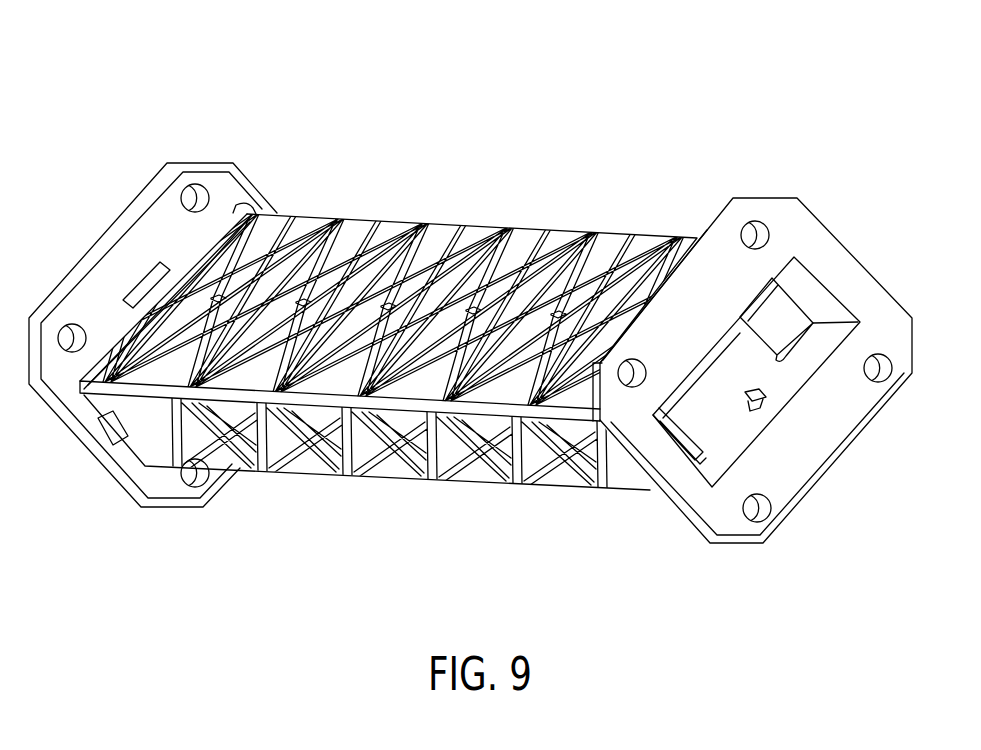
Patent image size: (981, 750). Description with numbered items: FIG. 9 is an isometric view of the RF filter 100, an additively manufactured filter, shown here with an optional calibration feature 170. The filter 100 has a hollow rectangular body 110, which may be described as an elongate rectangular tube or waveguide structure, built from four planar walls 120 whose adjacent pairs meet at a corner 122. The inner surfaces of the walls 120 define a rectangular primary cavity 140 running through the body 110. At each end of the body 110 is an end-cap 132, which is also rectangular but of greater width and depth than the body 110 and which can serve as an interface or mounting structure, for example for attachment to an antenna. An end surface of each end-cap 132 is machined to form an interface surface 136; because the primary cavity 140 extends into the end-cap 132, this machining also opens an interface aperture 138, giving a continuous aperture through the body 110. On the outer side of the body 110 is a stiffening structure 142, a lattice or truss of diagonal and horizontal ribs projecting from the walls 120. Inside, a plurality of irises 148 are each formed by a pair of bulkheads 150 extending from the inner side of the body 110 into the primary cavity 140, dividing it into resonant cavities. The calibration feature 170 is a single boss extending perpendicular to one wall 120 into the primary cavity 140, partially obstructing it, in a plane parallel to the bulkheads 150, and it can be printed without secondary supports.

The RF filter 100 is at (186, 101).
The hollow rectangular body 110 is at (463, 194).
The planar walls 120 is at (613, 247).
The corner 122 is at (253, 397).
The end-cap 132 is at (113, 270).
The interface surface 136 is at (713, 277).
The interface aperture 138 is at (808, 367).
The primary cavity 140 is at (692, 397).
The stiffening structure 142 is at (307, 230).
The irises 148 is at (726, 464).
The bulkheads 150 is at (790, 320).
The calibration feature 170 is at (767, 402).